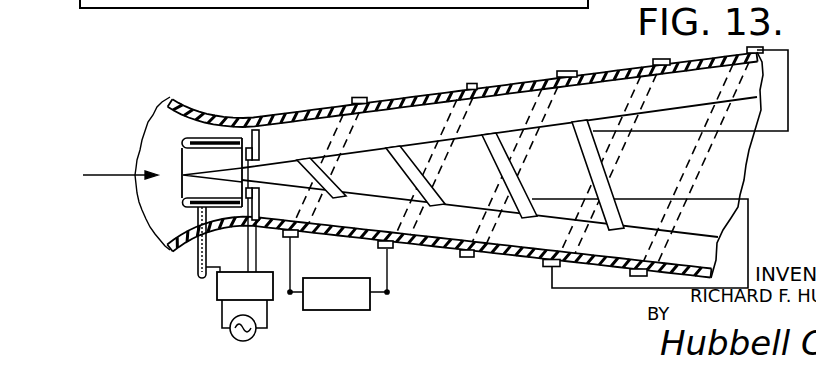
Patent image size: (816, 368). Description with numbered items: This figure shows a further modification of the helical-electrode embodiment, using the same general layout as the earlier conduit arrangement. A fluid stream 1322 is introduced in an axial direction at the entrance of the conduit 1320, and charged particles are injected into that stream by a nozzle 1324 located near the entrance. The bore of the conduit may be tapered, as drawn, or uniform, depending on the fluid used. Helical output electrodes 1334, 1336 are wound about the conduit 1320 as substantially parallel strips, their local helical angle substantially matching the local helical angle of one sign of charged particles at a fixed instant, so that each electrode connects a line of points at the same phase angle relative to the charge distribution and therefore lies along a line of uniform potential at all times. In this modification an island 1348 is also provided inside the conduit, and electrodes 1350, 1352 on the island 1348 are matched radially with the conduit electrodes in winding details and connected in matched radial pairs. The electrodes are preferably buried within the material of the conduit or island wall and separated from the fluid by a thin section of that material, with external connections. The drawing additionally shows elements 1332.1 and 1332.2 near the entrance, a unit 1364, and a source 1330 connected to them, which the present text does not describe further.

The conduit 1320 is at (216, 95).
The fluid stream 1322 is at (105, 172).
The nozzle 1324 is at (183, 204).
The AC power source 1330 is at (256, 334).
The first electrode 1332.1 is at (262, 135).
The second electrode 1332.2 is at (258, 196).
The helical output electrode 1334 is at (560, 73).
The helical output electrode 1336 is at (467, 87).
The island 1348 is at (473, 193).
The island electrode 1350 is at (364, 150).
The island electrode 1352 is at (322, 160).
The control unit 1364 is at (217, 285).